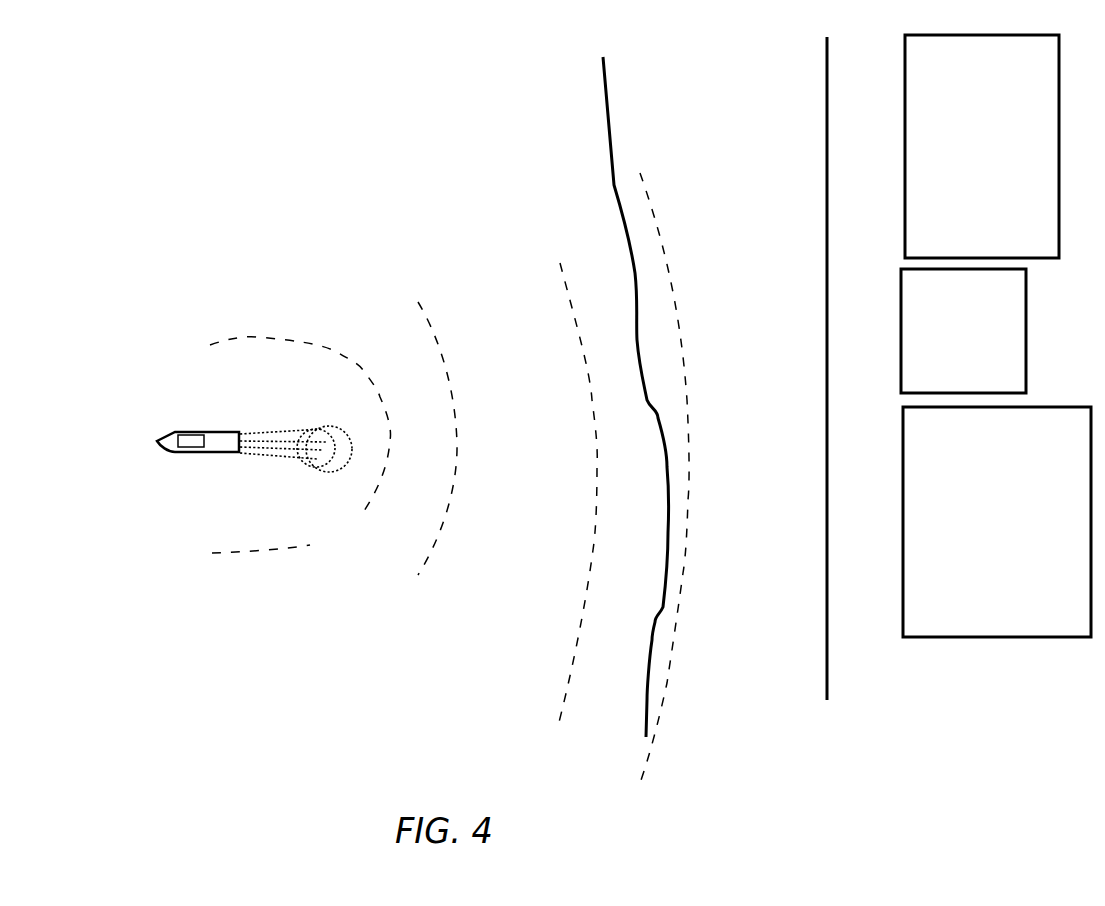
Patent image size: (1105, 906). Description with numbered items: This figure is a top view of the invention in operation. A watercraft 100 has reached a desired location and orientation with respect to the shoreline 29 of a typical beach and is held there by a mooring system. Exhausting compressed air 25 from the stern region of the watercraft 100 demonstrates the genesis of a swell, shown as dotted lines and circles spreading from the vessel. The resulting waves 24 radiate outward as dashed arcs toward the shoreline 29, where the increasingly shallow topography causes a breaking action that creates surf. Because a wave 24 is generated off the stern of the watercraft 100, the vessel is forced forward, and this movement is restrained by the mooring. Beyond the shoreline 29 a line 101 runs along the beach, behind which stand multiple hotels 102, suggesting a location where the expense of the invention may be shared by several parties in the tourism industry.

The watercraft 100 is at (175, 432).
The compressed air 25 is at (323, 422).
The waves 24 is at (433, 325).
The shoreline 29 is at (665, 543).
The dock / pier line 101 is at (825, 390).
The hotels 102 is at (905, 60).